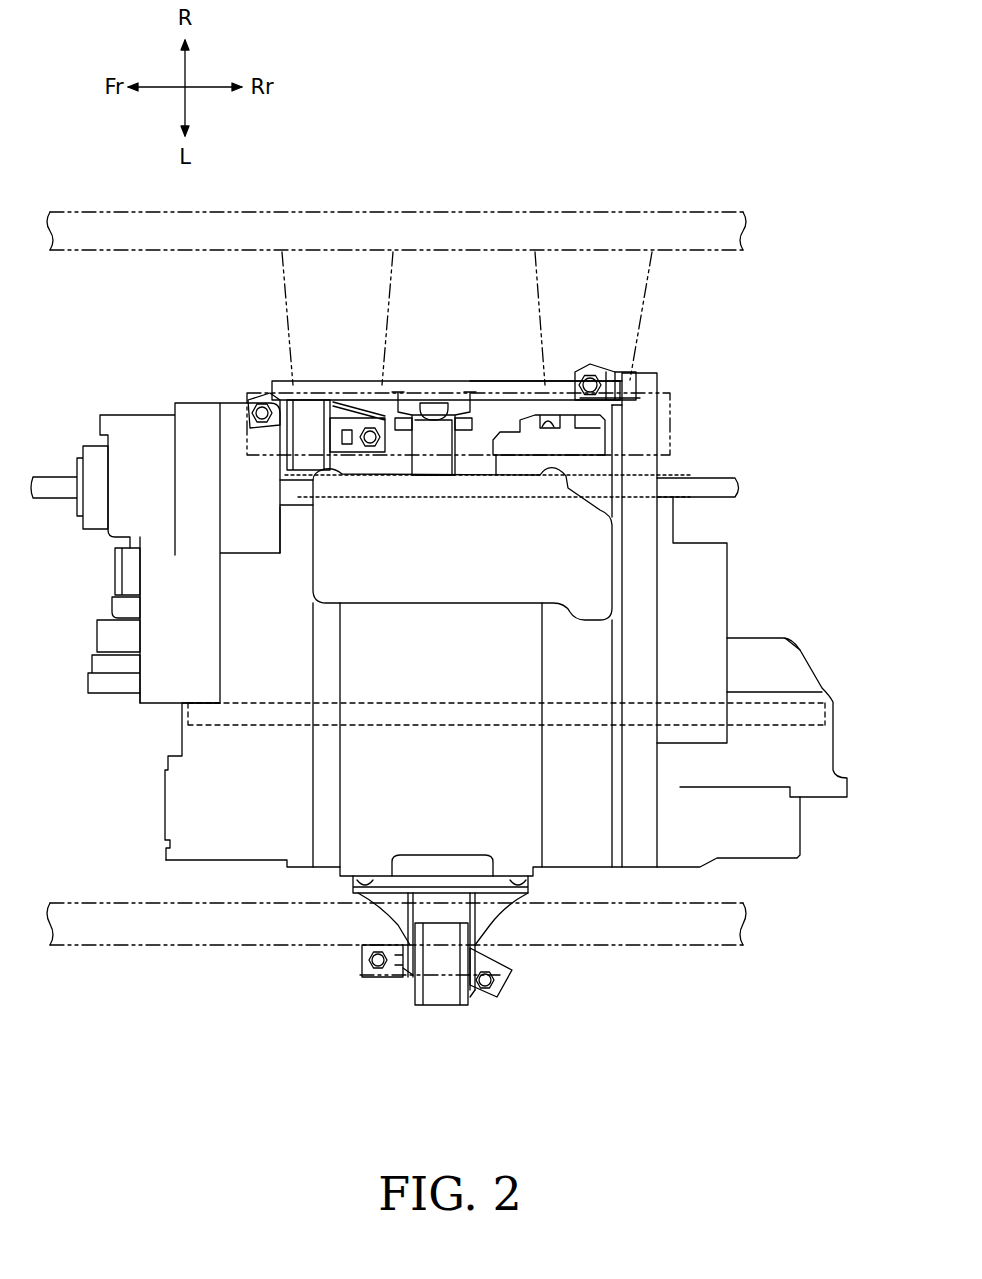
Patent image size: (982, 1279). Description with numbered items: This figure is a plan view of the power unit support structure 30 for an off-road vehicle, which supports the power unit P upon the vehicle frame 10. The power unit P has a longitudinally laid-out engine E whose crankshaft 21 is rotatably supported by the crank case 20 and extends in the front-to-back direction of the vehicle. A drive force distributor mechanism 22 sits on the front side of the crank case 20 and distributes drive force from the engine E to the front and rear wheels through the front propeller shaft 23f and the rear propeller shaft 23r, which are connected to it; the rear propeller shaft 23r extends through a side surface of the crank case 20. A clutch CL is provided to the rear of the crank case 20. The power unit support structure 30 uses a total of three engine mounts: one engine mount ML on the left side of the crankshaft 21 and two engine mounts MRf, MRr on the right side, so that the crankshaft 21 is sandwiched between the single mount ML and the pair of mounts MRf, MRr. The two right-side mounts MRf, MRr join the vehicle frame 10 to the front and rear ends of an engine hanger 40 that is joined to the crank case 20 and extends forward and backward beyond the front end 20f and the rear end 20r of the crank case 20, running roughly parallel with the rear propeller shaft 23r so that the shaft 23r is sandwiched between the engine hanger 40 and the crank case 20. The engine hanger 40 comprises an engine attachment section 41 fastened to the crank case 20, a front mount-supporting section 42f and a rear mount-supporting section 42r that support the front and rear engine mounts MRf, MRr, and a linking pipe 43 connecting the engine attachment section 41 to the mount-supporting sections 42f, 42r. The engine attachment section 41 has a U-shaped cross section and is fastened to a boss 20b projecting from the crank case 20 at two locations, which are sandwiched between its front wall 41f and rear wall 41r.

The vehicle frame 10 is at (685, 950).
The crank case 20 is at (518, 832).
The boss 20b is at (430, 430).
The front end of the crank case 20f is at (313, 768).
The rear end of the crank case 20r is at (623, 435).
The crankshaft 21 is at (462, 695).
The drive force distributor mechanism 22 is at (150, 455).
The front propeller shaft 23f is at (48, 495).
The rear propeller shaft 23r is at (713, 478).
The power unit support structure 30 is at (527, 996).
The engine hanger 40 is at (422, 360).
The engine attachment section 41 is at (455, 460).
The front wall 41f is at (407, 465).
The rear wall 41r is at (462, 443).
The front mount-supporting section 42f is at (265, 400).
The rear mount-supporting section 42r is at (608, 383).
The linking pipe 43 is at (470, 382).
The engine E is at (421, 777).
The left engine mount ML is at (415, 1003).
The front right engine mount MRf is at (316, 426).
The rear right engine mount MRr is at (595, 356).
The clutch CL is at (793, 668).
The power unit P is at (193, 325).